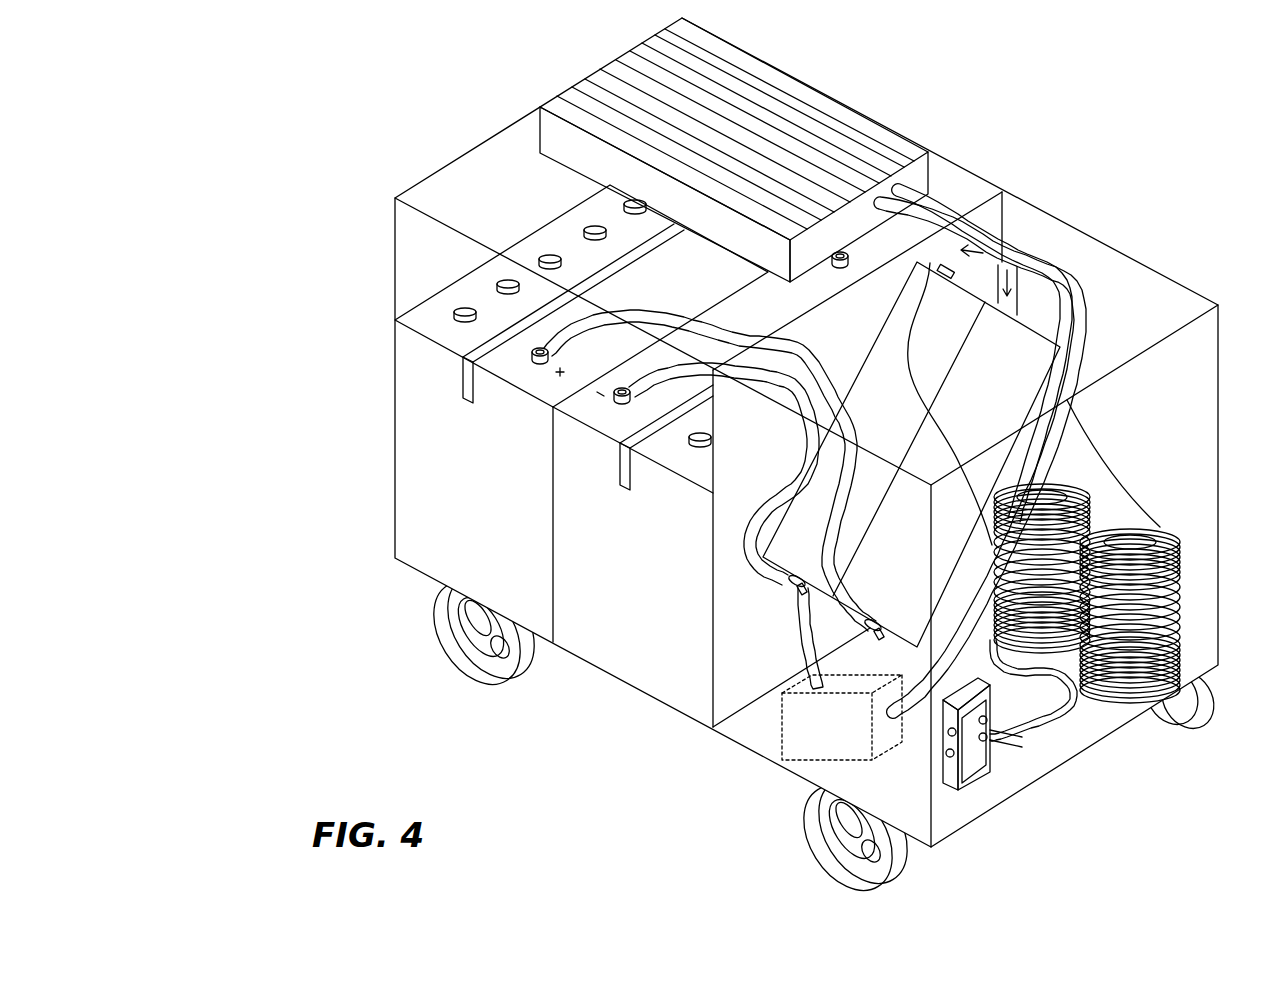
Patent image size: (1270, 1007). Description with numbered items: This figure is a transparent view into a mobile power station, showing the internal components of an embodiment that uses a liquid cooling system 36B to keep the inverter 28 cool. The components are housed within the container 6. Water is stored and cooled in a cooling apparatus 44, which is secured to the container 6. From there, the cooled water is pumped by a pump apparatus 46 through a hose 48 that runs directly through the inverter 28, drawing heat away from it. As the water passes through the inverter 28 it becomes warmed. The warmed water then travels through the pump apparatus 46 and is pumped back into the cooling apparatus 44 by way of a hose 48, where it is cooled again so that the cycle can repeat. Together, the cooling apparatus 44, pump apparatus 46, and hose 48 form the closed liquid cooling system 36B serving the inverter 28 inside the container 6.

The container 6 is at (680, 432).
The inverter 28 is at (1013, 391).
The liquid cooling system 36B is at (950, 183).
The cooling apparatus 44 is at (836, 99).
The pump apparatus 46 is at (838, 741).
The hose 48 is at (1230, 800).